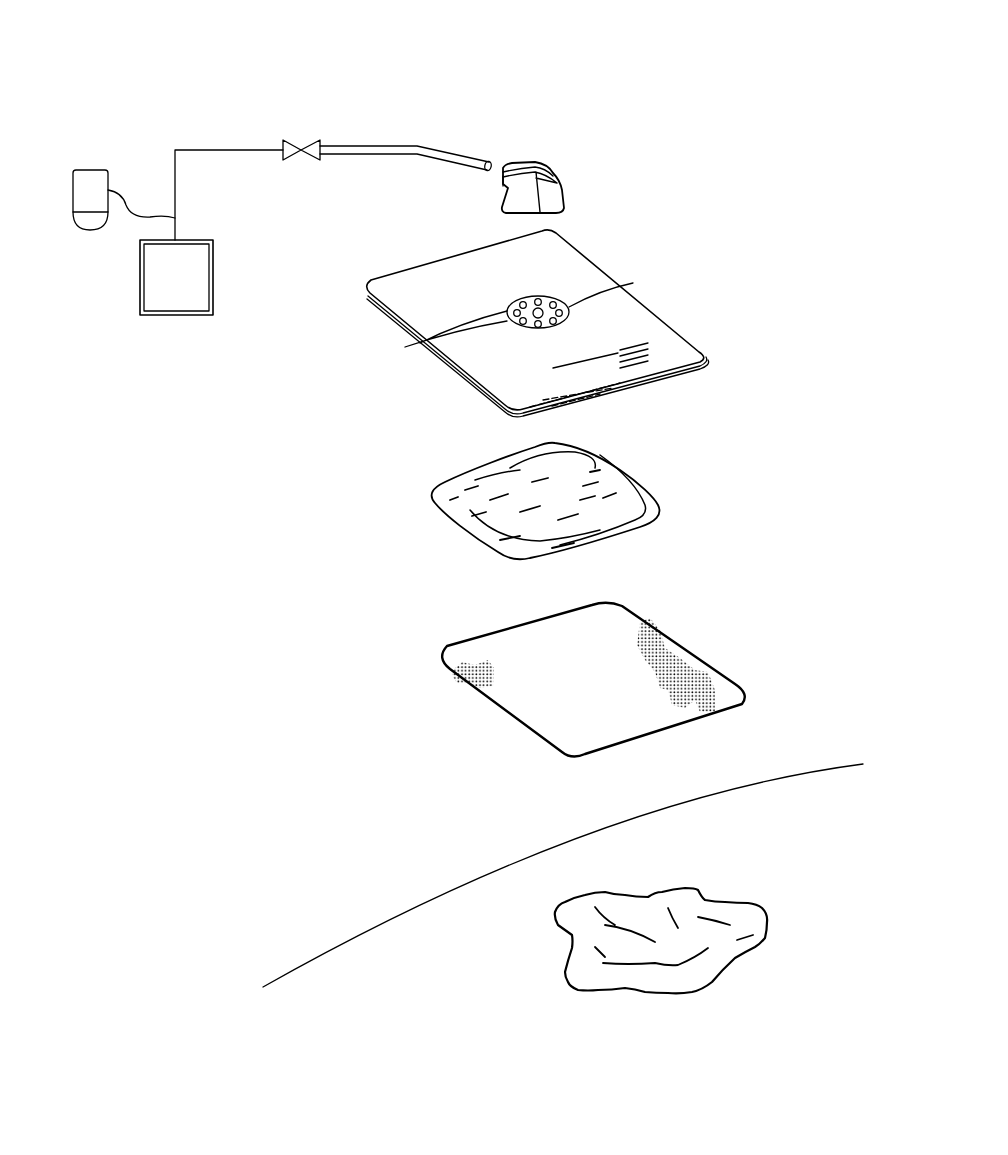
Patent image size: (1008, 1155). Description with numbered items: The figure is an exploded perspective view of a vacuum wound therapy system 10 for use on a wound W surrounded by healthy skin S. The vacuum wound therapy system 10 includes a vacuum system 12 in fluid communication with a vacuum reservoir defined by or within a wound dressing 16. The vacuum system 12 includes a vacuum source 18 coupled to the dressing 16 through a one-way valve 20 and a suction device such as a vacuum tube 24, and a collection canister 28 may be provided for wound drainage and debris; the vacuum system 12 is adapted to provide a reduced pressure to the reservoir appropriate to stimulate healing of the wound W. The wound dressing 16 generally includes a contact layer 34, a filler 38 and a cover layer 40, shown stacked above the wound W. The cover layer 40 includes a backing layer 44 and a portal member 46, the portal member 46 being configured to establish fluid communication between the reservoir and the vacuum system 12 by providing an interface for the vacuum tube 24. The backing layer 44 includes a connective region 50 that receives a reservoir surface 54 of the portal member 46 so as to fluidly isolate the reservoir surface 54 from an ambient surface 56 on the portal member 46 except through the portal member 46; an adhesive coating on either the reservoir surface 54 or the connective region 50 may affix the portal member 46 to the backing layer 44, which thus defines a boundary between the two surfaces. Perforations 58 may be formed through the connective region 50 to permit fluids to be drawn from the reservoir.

The vacuum wound therapy system 10 is at (225, 75).
The vacuum system 12 is at (88, 270).
The wound dressing 16 is at (616, 93).
The vacuum source 18 is at (183, 240).
The one-way valve 20 is at (314, 160).
The vacuum tube 24 is at (375, 148).
The collection canister 28 is at (98, 170).
The contact layer 34 is at (640, 613).
The filler 38 is at (597, 462).
The cover layer 40 is at (708, 404).
The backing layer 44 is at (694, 350).
The portal member 46 is at (522, 165).
The connective region 50 is at (631, 283).
The reservoir surface 54 is at (518, 220).
The ambient surface 56 is at (496, 181).
The perforations 58 is at (405, 347).
The healthy skin S is at (728, 865).
The wound W is at (753, 912).